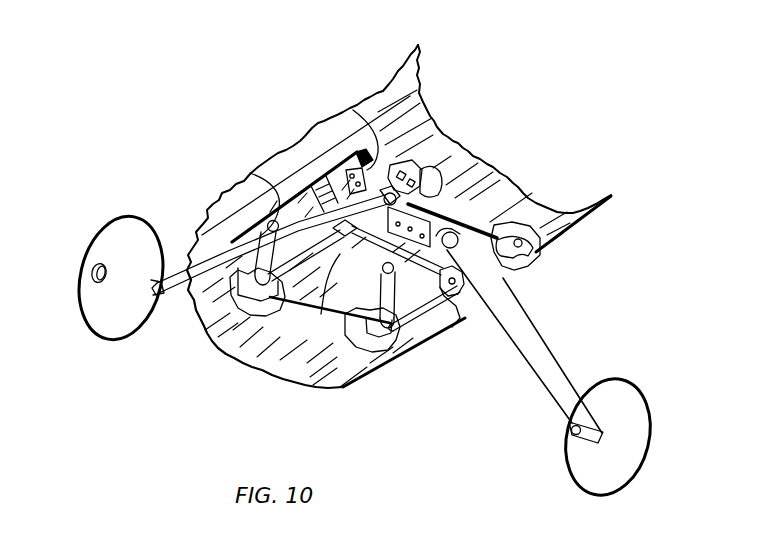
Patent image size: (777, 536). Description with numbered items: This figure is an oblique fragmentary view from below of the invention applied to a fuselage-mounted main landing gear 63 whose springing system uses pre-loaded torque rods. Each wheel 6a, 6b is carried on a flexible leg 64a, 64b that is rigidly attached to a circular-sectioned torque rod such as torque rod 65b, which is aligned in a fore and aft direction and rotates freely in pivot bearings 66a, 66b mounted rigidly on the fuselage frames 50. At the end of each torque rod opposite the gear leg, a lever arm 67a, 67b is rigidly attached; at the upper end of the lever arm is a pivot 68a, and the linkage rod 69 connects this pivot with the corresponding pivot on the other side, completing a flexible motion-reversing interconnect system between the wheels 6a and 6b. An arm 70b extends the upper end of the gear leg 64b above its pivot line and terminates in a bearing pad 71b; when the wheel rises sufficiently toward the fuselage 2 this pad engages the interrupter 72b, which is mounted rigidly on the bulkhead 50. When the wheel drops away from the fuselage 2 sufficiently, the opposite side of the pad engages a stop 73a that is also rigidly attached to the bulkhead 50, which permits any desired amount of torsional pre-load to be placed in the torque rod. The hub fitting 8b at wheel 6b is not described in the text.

The fuselage 2 is at (418, 52).
The stop 73a is at (356, 118).
The pivot 68a is at (250, 175).
The lever arm 67a is at (267, 224).
The wheel 6a is at (103, 224).
The flexible leg 64a is at (178, 287).
The landing gear 63 is at (155, 293).
The linkage rod 69 is at (321, 316).
The lever arm 67b is at (382, 302).
The torque rod 65b is at (431, 291).
The fuselage frame 50 is at (426, 326).
The pivot bearing 66b is at (462, 306).
The arm 70b is at (462, 252).
The bearing pad 71b is at (461, 216).
The interrupter 72b is at (440, 196).
The pivot bearing 66a is at (408, 171).
The flexible leg 64b is at (556, 367).
The wheel 6b is at (636, 405).
The hub bracket 8b is at (570, 428).